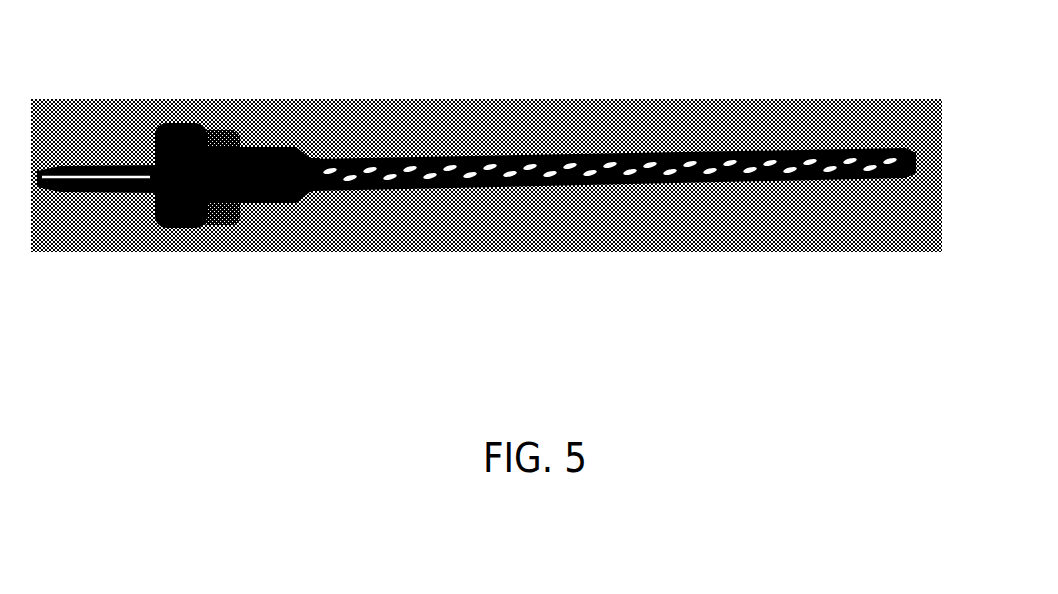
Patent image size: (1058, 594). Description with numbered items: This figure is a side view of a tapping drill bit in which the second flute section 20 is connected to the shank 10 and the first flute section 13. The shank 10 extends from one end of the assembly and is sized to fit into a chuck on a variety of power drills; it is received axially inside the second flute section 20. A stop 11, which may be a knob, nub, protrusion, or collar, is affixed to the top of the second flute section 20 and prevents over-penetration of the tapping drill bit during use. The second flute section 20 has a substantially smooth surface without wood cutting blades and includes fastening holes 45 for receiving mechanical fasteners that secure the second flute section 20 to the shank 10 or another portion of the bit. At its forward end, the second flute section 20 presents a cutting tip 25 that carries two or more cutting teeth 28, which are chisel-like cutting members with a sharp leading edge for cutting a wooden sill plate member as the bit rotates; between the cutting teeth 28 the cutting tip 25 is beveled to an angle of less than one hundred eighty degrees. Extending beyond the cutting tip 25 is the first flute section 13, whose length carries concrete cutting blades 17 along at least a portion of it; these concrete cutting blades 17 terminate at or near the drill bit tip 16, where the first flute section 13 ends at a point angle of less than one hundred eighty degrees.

The shank 10 is at (135, 180).
The stop 11 is at (173, 125).
The first flute section 13 is at (614, 179).
The drill bit tip 16 is at (916, 163).
The concrete cutting blades 17 is at (617, 162).
The second flute section 20 is at (223, 170).
The cutting tip 25 is at (307, 190).
The cutting teeth 28 is at (315, 163).
The fastening holes 45 is at (270, 197).